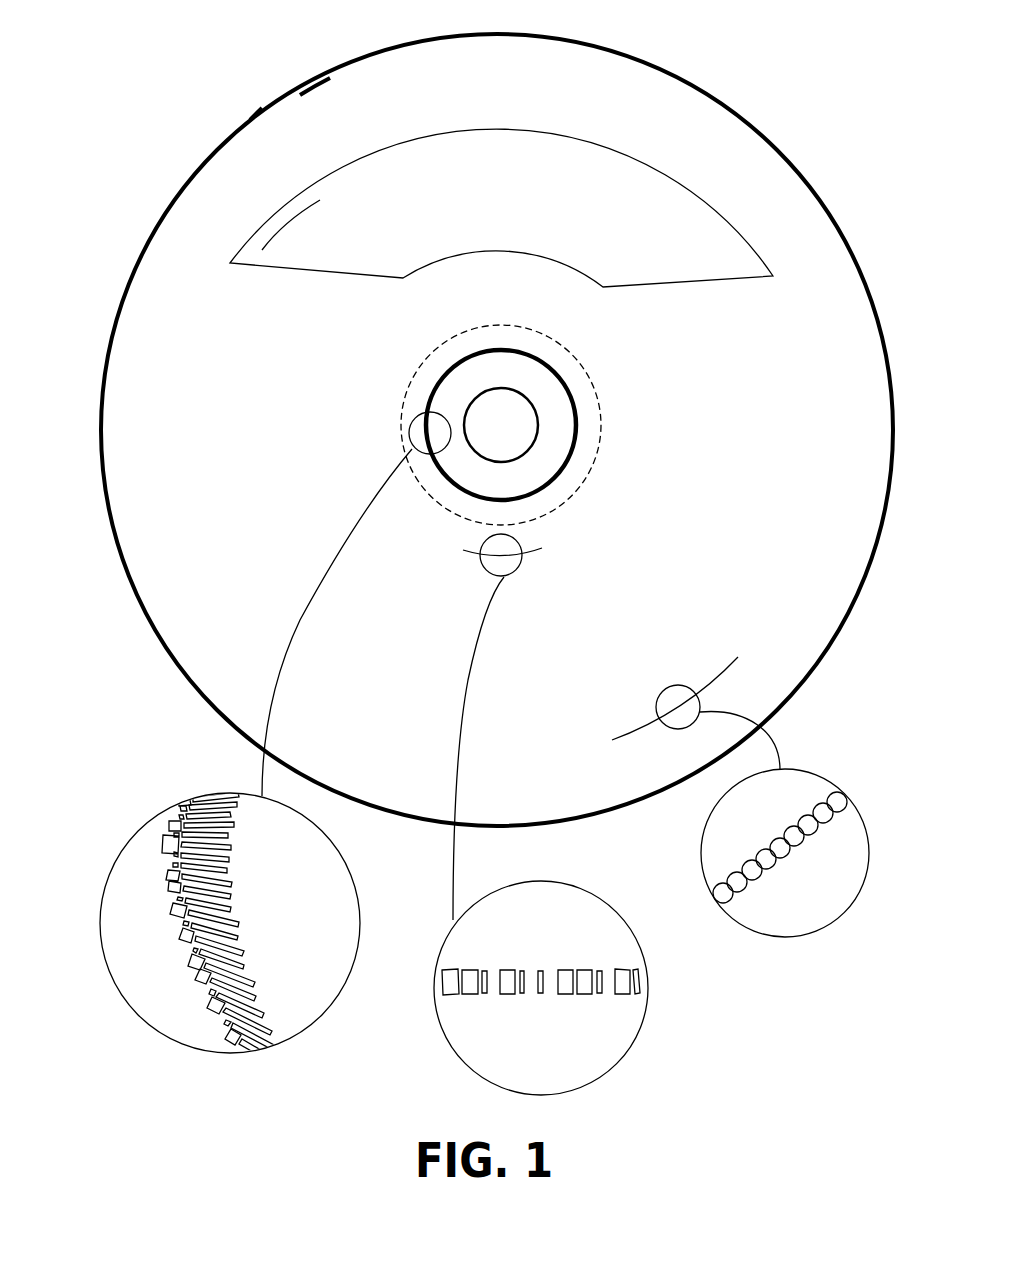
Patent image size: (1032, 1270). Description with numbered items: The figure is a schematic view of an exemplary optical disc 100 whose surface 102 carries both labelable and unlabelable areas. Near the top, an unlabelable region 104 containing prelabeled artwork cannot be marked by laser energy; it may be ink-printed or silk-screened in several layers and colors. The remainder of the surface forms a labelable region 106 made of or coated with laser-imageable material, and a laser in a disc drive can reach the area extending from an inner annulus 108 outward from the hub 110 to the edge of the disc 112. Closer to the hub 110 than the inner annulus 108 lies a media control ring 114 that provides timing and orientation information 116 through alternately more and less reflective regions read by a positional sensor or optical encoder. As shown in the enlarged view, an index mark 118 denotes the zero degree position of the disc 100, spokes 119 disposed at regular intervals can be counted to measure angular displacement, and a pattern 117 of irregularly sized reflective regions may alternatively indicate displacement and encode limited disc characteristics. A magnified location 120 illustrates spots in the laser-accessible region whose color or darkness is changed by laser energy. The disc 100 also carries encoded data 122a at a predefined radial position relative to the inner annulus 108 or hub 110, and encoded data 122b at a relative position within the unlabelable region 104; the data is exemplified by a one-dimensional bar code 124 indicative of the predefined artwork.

The optical disc 100 is at (790, 50).
The surface 102 is at (313, 118).
The unlabelable region 104 is at (678, 267).
The labelable region 106 is at (790, 439).
The inner annulus 108 is at (408, 392).
The hub 110 is at (477, 400).
The edge of the disc 112 is at (250, 120).
The media control ring 114 is at (570, 397).
The orientation information 116 is at (206, 927).
The pattern 117 is at (168, 968).
The index mark 118 is at (180, 880).
The spokes 119 is at (260, 915).
The location 120 is at (794, 856).
The encoded data 122a is at (465, 551).
The encoded data 122b is at (290, 225).
The bar code 124 is at (633, 1040).